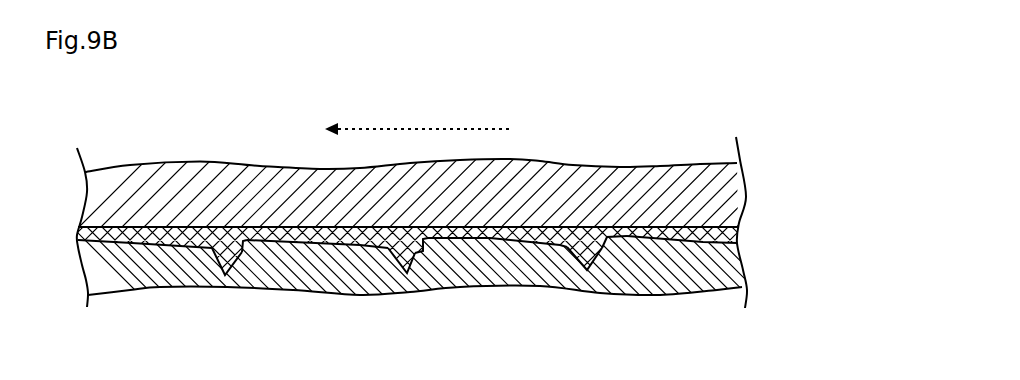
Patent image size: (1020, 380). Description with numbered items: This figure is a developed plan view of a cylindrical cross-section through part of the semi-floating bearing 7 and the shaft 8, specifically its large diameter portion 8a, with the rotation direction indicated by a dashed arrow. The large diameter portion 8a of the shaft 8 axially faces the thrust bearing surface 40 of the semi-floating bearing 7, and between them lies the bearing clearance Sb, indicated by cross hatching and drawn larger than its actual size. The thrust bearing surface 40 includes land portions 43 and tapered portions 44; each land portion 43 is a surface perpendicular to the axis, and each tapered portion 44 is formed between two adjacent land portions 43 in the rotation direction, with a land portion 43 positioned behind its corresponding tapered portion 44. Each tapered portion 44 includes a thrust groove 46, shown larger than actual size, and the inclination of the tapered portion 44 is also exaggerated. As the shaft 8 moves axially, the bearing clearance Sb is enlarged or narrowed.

The semi-floating bearing 7 is at (302, 282).
The shaft 8 is at (223, 196).
The large diameter portion 8a is at (188, 193).
The bearing clearance Sb is at (588, 228).
The thrust bearing surface 40 is at (507, 240).
The land portion 43 is at (642, 237).
The tapered portion 44 is at (537, 238).
The thrust groove 46 is at (411, 258).